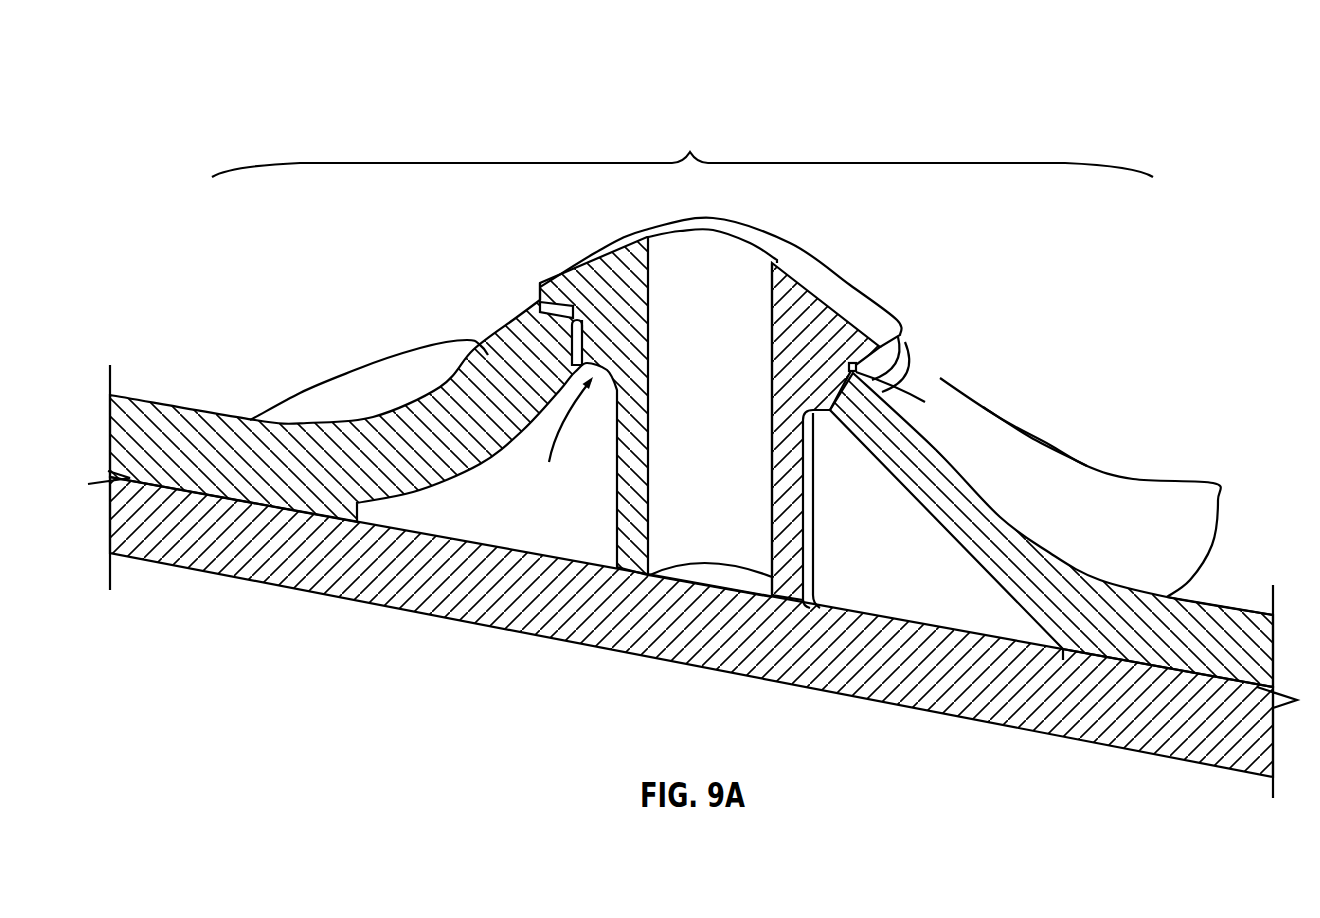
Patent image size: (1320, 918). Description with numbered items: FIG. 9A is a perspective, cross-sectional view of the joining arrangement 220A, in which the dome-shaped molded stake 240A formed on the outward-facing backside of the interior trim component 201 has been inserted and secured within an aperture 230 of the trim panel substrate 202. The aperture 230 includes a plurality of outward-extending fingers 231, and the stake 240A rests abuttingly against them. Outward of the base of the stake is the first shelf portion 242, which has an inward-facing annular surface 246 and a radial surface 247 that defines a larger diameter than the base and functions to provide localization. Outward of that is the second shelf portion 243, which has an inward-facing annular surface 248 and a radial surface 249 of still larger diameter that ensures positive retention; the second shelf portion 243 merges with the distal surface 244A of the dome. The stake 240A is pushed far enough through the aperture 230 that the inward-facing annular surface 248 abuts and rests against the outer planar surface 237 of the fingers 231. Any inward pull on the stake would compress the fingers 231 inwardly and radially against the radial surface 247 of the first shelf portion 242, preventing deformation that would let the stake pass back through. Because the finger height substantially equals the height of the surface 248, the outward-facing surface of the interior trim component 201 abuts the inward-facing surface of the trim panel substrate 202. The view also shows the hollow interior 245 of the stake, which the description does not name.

The joining arrangement 220A is at (292, 92).
The aperture 230 is at (631, 343).
The fingers 231 is at (403, 430).
The radial surface 249 is at (540, 290).
The outer planar surface 237 is at (545, 305).
The second shelf portion 243 is at (570, 333).
The radial surface 247 is at (585, 357).
The distal surface 244A is at (812, 257).
The molded stake 240A is at (902, 243).
The central opening 245 is at (741, 486).
The first shelf portion 242 is at (549, 462).
The inward-facing annular surface 246 is at (818, 452).
The inward-facing annular surface 248 is at (930, 375).
The interior trim component 201 is at (915, 598).
The trim panel substrate 202 is at (1258, 592).